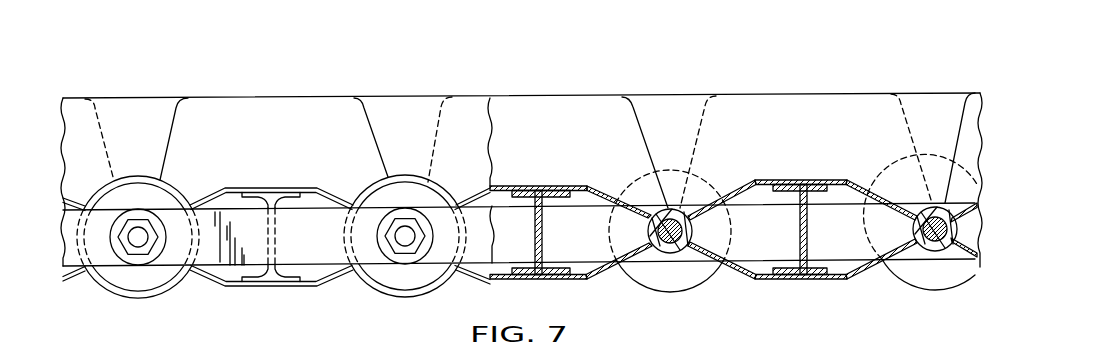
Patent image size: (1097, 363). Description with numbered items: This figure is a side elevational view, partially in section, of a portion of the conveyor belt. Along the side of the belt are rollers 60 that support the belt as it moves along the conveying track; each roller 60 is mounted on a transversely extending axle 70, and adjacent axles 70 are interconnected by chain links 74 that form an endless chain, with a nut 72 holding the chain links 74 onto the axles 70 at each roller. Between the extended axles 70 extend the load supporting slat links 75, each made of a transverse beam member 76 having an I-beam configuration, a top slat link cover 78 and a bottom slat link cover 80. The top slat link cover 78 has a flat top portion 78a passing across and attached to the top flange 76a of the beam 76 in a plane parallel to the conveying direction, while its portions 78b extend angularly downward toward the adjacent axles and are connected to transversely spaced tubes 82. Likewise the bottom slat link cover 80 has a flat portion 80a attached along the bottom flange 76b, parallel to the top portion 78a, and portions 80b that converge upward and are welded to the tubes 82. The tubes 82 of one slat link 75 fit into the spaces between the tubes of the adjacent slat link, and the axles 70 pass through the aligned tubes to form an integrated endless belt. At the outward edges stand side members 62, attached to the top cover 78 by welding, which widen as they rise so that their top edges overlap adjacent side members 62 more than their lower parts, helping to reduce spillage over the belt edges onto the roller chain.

The roller 60 is at (177, 182).
The side member 62 is at (286, 114).
The axle 70 is at (140, 247).
The nut 72 is at (130, 257).
The chain link 74 is at (320, 215).
The slat link 75 is at (262, 298).
The transverse beam member 76 is at (543, 230).
The top flange 76a is at (578, 191).
The bottom flange 76b is at (808, 265).
The top slat link cover 78 is at (566, 187).
The top portion of top slat link cover 78a is at (513, 187).
The angled portion of top slat link cover 78b is at (718, 192).
The bottom slat link cover 80 is at (577, 284).
The flat portion of bottom slat link cover 80a is at (823, 279).
The converging portion of bottom slat link cover 80b is at (728, 267).
The tube 82 is at (654, 238).